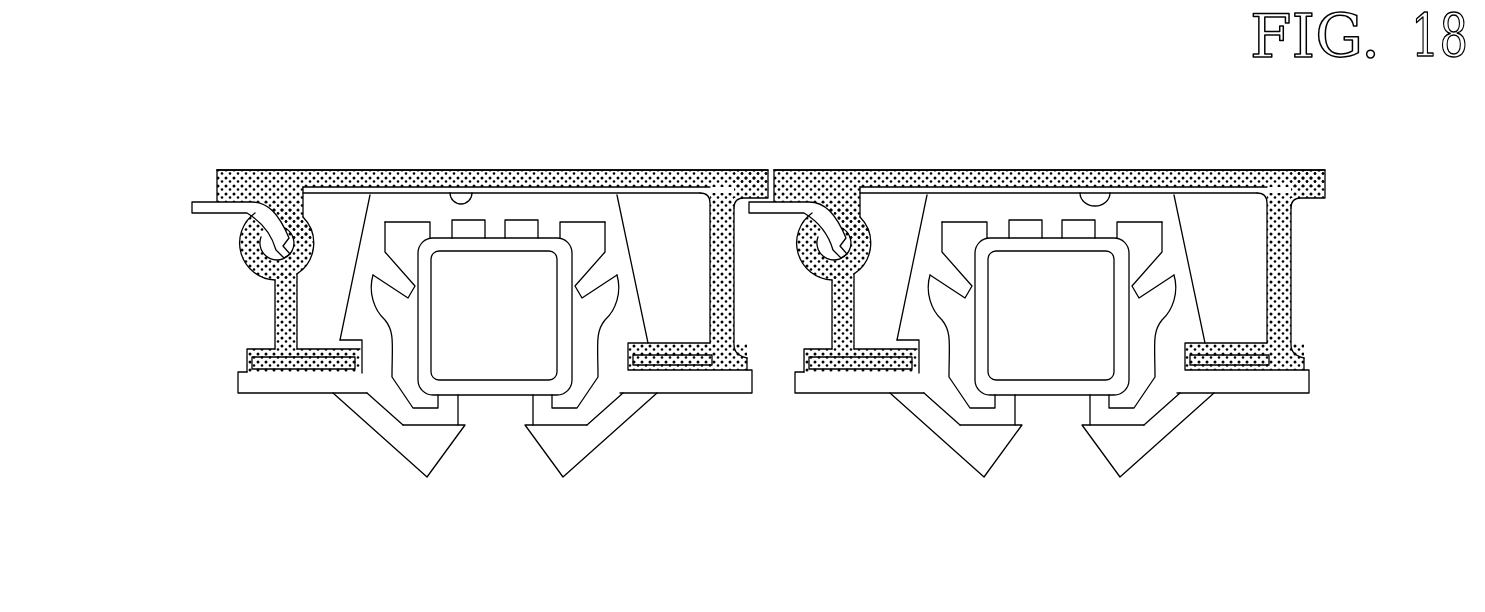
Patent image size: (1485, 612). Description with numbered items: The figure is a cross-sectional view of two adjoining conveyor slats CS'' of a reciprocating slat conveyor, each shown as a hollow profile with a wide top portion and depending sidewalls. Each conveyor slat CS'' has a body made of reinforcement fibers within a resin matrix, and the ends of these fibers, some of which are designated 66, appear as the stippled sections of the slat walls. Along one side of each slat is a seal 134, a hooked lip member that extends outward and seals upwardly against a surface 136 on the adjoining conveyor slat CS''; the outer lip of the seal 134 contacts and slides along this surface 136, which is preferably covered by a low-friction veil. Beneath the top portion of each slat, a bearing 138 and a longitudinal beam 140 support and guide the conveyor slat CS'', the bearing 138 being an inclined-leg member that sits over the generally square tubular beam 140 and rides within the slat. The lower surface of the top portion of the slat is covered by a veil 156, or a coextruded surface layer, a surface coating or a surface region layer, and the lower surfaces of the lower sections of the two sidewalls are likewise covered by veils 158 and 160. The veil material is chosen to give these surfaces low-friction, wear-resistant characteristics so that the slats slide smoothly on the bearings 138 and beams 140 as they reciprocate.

The reinforcement fibers 66 is at (580, 170).
The conveyor slat CS'' is at (771, 122).
The seal 134 is at (195, 215).
The surface 136 is at (712, 258).
The bearing 138 is at (379, 203).
The longitudinal beam 140 is at (496, 398).
The veil 156 is at (475, 170).
The veil 158 is at (278, 376).
The veil 160 is at (680, 374).